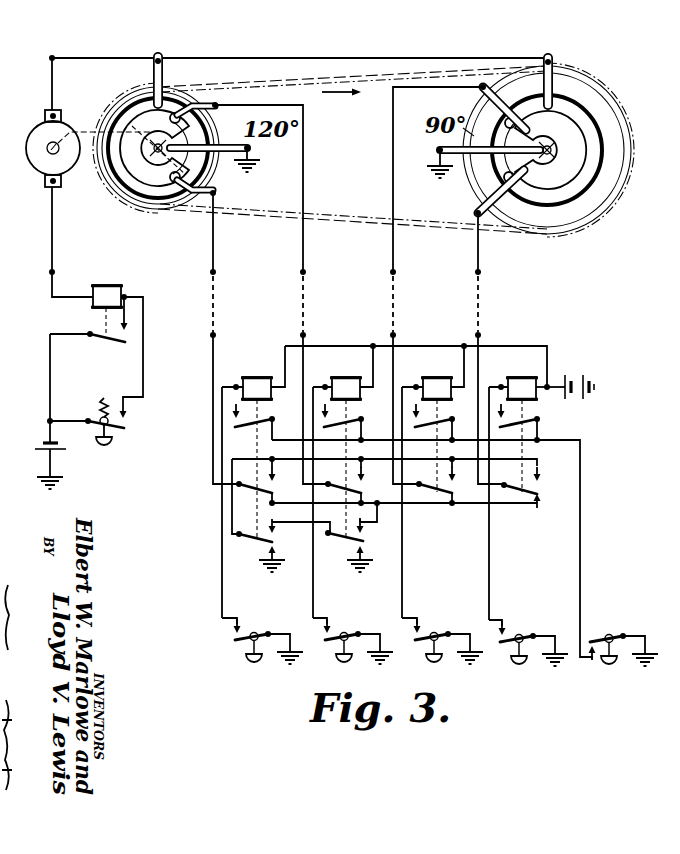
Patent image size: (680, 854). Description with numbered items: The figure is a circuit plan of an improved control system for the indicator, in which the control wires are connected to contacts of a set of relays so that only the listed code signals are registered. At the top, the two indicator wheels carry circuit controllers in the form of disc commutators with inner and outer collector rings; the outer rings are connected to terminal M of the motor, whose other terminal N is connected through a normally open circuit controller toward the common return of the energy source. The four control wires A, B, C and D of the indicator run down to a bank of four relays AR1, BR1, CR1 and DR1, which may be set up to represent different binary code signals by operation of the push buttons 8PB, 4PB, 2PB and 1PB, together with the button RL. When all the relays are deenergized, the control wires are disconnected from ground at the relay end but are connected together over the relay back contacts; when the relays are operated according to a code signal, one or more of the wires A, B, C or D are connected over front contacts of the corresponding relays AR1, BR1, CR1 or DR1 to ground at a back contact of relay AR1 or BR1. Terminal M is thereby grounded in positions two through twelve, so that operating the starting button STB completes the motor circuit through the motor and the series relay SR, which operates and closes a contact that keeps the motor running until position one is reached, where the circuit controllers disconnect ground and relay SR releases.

The terminal M of motor M is at (282, 79).
The terminal N of motor N is at (58, 278).
The control wire A is at (208, 332).
The control wire B is at (249, 293).
The control wire C is at (465, 284).
The control wire D is at (483, 327).
The series relay SR is at (96, 340).
The starting button STB is at (87, 406).
The relay AR1 is at (253, 482).
The relay BR1 is at (343, 482).
The relay CR1 is at (433, 482).
The relay DR1 is at (541, 486).
The push button 8PB is at (262, 628).
The push button 4PB is at (353, 628).
The push button 2PB is at (442, 628).
The push button 1PB is at (528, 630).
The push button RL is at (624, 630).